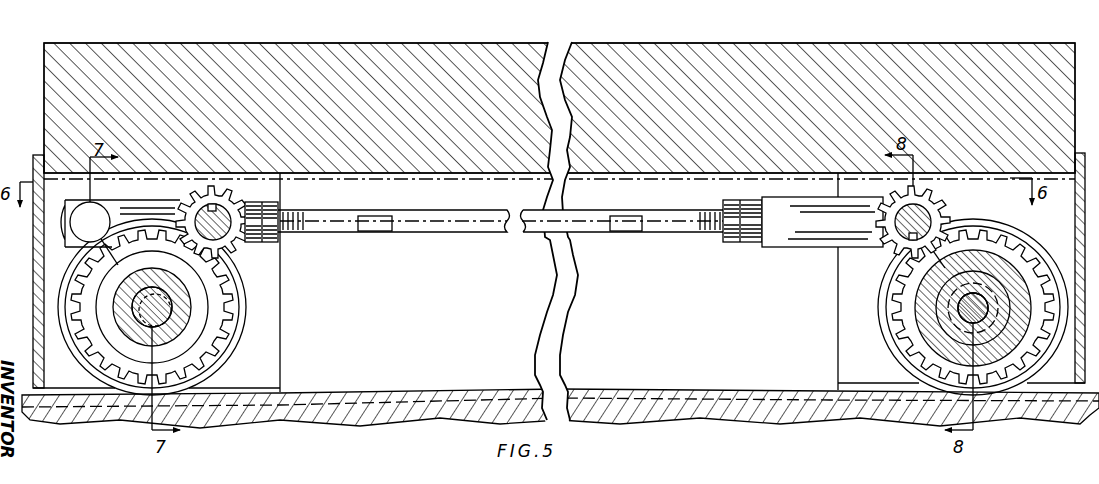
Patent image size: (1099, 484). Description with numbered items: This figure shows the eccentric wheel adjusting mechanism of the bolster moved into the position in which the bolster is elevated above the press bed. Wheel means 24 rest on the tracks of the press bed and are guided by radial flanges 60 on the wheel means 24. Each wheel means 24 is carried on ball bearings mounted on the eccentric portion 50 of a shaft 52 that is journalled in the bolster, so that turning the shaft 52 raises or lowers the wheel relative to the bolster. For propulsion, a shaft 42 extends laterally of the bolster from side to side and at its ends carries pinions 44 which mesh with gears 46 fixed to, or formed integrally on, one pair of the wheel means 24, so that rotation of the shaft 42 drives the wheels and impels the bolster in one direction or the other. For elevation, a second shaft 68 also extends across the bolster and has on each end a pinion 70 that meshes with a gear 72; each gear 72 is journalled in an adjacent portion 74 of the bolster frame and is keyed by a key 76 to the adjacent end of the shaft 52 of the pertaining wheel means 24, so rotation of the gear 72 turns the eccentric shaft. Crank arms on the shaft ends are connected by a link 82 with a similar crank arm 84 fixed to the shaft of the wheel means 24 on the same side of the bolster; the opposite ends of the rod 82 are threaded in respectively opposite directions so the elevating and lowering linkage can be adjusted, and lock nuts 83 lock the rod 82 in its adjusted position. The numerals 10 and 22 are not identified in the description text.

The floor 10 is at (246, 425).
The ceiling block 22 is at (44, 68).
The wheel means 24 is at (235, 357).
The shaft 42 is at (229, 212).
The pinion 44 is at (237, 252).
The gear 46 is at (214, 308).
The eccentric portion 50 is at (225, 337).
The shaft 52 is at (157, 300).
The radial flanges 60 is at (992, 222).
The shaft 68 is at (928, 216).
The pinion 70 is at (900, 247).
The gear 72 is at (912, 300).
The portion of the bolster frame 74 is at (923, 345).
The key 76 is at (958, 314).
The link 82 is at (598, 234).
The lock nuts 83 is at (736, 243).
The crank arm 84 is at (63, 226).